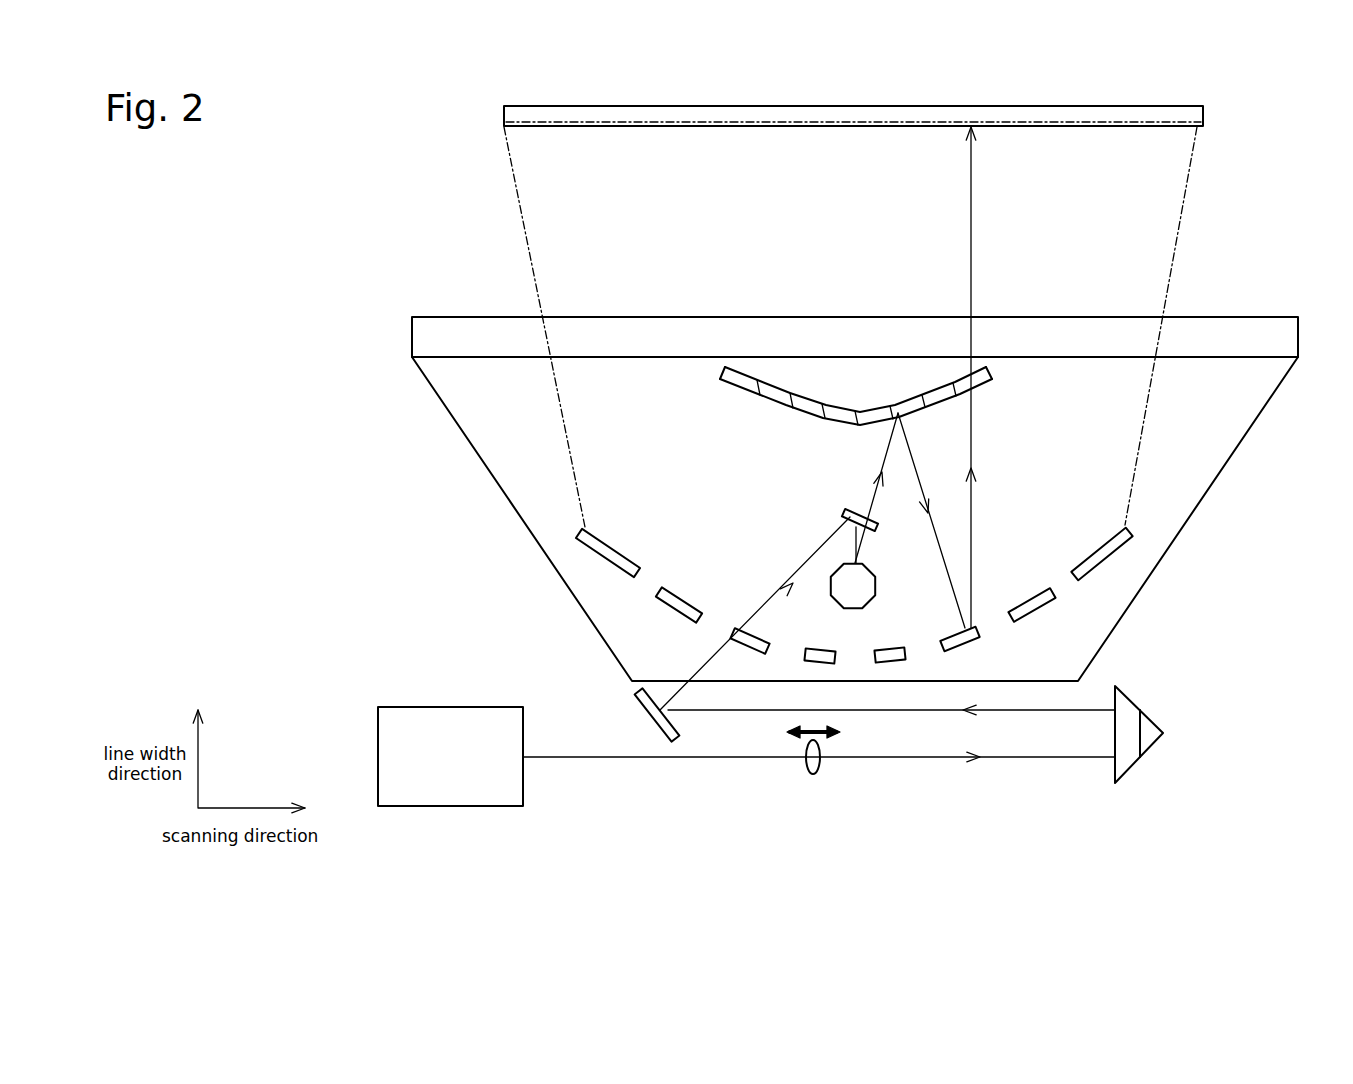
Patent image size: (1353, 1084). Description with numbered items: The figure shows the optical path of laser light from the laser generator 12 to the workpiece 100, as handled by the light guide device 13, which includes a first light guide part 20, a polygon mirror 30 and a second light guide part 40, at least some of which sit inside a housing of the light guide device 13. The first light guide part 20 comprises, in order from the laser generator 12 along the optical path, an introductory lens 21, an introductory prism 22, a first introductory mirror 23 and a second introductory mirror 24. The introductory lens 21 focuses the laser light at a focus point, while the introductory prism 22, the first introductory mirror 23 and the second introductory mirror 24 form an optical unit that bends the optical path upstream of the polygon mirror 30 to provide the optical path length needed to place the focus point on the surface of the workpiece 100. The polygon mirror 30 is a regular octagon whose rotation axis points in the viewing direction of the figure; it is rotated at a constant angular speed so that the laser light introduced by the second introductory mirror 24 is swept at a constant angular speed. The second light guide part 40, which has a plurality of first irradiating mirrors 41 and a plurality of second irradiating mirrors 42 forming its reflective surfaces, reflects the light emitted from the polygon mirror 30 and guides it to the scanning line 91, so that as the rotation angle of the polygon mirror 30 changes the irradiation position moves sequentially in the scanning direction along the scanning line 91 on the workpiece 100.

The workpiece 100 is at (504, 121).
The scanning line 91 is at (1093, 127).
The light guide device 13 is at (370, 348).
The second light guide part 40 is at (854, 515).
The first irradiating mirrors 41 is at (732, 383).
The second irradiating mirrors 42 is at (607, 547).
The polygon mirror 30 is at (833, 577).
The laser generator 12 is at (403, 717).
The first light guide part 20 is at (843, 712).
The first introductory mirror 23 is at (676, 722).
The introductory lens 21 is at (822, 760).
The second introductory mirror 24 is at (877, 527).
The introductory prism 22 is at (1064, 770).